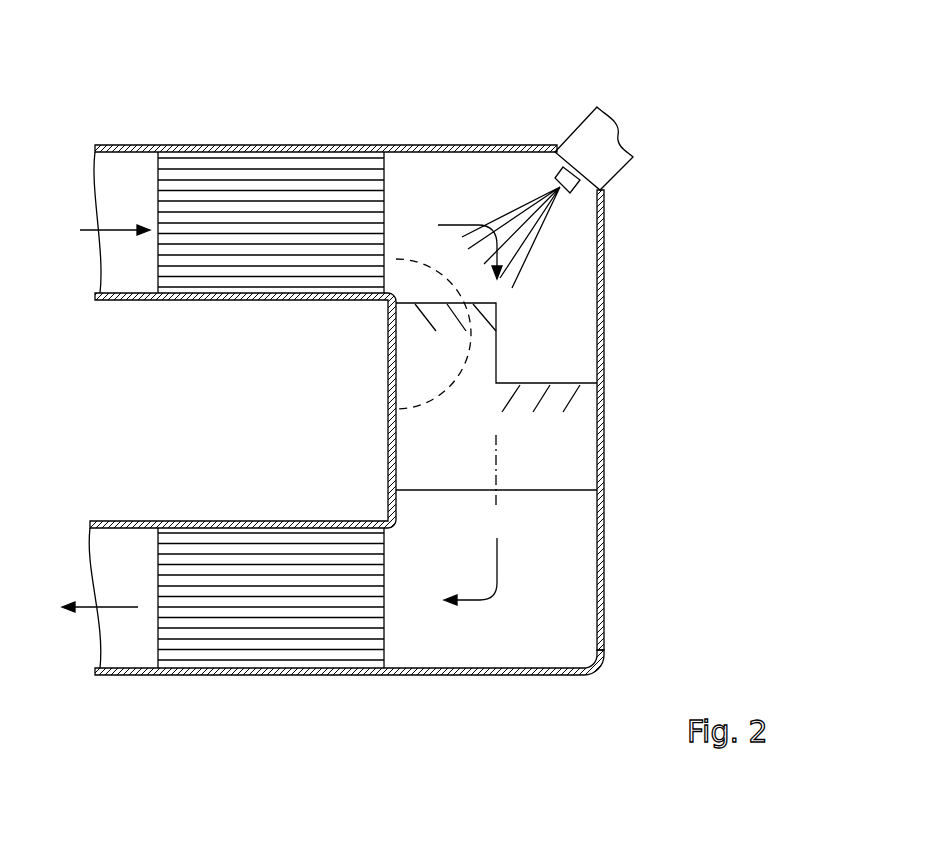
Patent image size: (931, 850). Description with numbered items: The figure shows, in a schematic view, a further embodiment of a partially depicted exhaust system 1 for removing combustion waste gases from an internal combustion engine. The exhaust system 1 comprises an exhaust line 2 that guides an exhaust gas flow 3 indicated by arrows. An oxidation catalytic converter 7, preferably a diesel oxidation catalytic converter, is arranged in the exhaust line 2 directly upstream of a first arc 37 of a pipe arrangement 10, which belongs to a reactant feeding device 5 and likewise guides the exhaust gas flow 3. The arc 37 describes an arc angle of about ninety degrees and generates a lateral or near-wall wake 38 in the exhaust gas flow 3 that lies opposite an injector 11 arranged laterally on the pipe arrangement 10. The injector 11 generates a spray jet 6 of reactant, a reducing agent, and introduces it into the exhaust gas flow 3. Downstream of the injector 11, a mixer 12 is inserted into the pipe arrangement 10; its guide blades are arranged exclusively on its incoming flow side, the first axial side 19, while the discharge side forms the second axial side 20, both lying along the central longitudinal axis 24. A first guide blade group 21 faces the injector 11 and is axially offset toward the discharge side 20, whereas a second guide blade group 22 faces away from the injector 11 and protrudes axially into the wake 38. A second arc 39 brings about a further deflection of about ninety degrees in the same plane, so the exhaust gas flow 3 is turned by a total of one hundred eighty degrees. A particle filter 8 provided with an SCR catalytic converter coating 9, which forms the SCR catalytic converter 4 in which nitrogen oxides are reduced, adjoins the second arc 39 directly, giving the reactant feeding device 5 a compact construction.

The exhaust system 1 is at (730, 181).
The exhaust line 2 is at (675, 329).
The exhaust gas flow 3 is at (112, 240).
The SCR catalytic converter 4 is at (260, 510).
The reactant feeding device 5 is at (632, 191).
The spray jet 6 is at (538, 235).
The oxidation catalytic converter 7 is at (276, 140).
The particle filter 8 is at (257, 690).
The SCR catalytic converter coating 9 is at (295, 555).
The pipe arrangement 10 is at (604, 517).
The injector 11 is at (583, 138).
The mixer 12 is at (612, 433).
The first axial side 19 is at (430, 303).
The second axial side 20 is at (535, 492).
The first guide blade group 21 is at (580, 397).
The second guide blade group 22 is at (495, 315).
The central longitudinal axis 24 is at (497, 510).
The arc 37 is at (490, 200).
The wake 38 is at (408, 290).
The second arc 39 is at (515, 628).